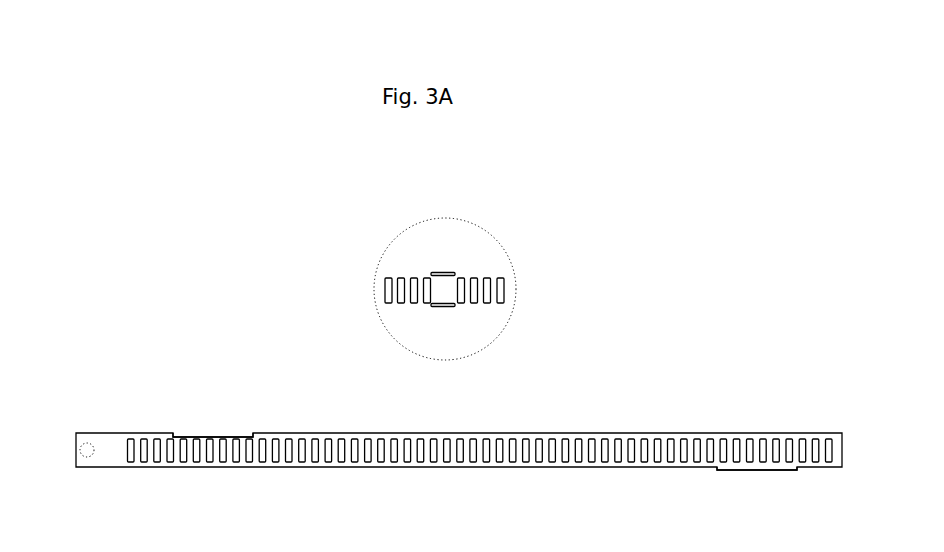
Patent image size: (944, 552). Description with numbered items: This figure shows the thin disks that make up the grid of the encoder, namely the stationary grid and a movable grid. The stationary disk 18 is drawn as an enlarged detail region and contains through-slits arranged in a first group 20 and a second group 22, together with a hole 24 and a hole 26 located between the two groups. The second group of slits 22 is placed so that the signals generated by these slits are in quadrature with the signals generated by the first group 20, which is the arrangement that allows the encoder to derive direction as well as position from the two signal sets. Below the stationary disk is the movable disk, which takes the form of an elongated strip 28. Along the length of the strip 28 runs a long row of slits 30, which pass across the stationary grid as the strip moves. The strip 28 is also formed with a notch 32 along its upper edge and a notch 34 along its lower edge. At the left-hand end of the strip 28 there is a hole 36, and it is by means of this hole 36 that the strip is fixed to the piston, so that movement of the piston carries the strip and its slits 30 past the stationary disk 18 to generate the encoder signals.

The stationary disk 18 is at (491, 223).
The first group of slits 20 is at (390, 269).
The second group of slits 22 is at (515, 272).
The hole 24 is at (438, 264).
The hole 26 is at (464, 318).
The movable disk (strip) 28 is at (108, 422).
The slits 30 is at (291, 464).
The notch 32 is at (224, 422).
The notch 34 is at (737, 477).
The hole 36 is at (75, 428).